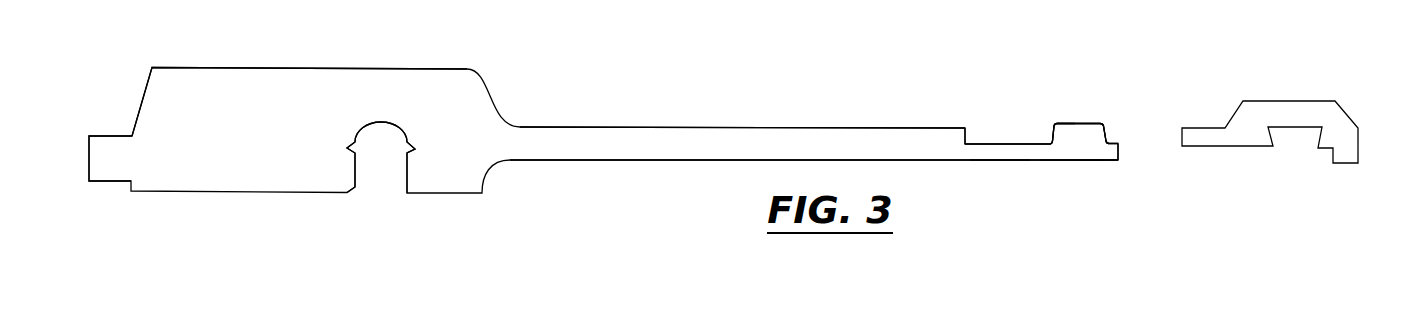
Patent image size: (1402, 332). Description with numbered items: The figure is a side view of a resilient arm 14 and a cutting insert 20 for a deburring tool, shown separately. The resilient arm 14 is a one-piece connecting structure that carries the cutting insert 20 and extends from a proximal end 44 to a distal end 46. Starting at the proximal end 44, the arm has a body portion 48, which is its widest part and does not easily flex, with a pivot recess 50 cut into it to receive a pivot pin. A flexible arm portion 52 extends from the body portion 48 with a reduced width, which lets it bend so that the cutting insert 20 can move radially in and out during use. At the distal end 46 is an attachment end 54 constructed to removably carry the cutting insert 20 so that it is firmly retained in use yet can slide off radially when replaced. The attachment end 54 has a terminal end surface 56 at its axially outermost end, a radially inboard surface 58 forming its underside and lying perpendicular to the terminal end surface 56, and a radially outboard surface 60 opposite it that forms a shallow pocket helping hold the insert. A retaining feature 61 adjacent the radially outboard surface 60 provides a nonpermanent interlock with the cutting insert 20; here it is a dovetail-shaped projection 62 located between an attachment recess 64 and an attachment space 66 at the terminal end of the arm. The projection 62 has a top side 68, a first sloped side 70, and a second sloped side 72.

The resilient arm 14 is at (492, 105).
The cutting insert 20 is at (1281, 97).
The proximal end 44 is at (108, 154).
The distal end 46 is at (1097, 152).
The body portion 48 is at (223, 105).
The pivot recess 50 is at (398, 128).
The flexible arm portion 52 is at (684, 140).
The attachment end 54 is at (998, 152).
The terminal end surface 56 is at (1122, 155).
The radially inboard surface 58 is at (1077, 160).
The radially outboard surface 60 is at (1012, 144).
The retaining feature 61 is at (1093, 117).
The dovetail-shaped projection 62 is at (1077, 135).
The attachment recess 64 is at (1000, 138).
The attachment space 66 is at (1108, 139).
The top side 68 is at (1057, 121).
The first sloped side 70 is at (1050, 132).
The second sloped side 72 is at (1106, 128).